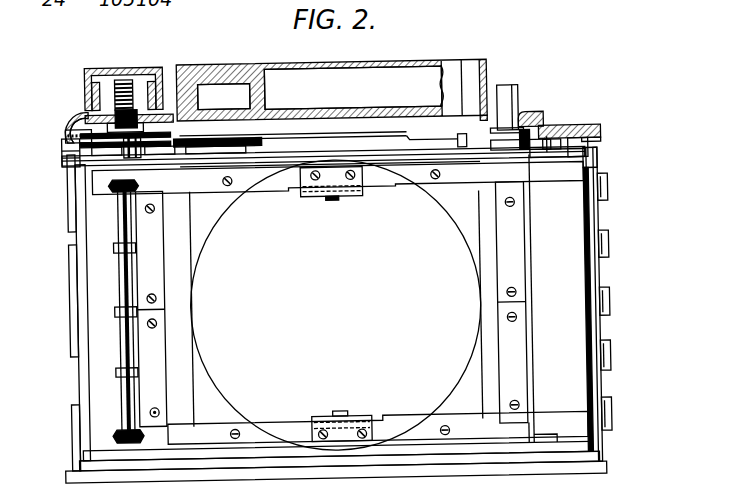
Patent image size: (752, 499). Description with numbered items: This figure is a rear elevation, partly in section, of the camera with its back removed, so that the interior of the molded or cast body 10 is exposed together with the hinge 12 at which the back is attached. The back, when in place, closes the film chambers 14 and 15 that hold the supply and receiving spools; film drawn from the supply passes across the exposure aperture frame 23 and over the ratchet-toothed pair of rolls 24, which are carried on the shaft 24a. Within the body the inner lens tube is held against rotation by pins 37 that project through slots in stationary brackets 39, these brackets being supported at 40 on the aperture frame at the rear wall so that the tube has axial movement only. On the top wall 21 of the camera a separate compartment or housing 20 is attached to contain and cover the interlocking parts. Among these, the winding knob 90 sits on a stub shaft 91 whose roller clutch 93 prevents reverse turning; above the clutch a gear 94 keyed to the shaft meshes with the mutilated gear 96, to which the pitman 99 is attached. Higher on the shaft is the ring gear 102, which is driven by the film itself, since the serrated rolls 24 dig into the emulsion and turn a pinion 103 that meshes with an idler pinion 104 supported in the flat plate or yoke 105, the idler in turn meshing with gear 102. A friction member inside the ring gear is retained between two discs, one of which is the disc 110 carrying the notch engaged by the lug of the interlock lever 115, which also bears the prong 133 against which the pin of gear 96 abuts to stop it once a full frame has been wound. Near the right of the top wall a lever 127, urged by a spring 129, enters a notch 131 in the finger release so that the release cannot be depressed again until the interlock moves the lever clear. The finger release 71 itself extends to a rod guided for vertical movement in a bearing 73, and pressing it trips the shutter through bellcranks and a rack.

The body 10 is at (600, 158).
The hinge 12 is at (609, 247).
The film chamber 14 is at (572, 333).
The film chamber 15 is at (91, 362).
The compartment or housing 20 is at (485, 62).
The top wall 21 is at (575, 150).
The exposure aperture frame 23 is at (478, 349).
The ratchet-toothed rolls 24 is at (117, 186).
The shaft 24a is at (112, 252).
The pins 37 is at (338, 200).
The stationary brackets 39 is at (364, 196).
The support 40 is at (366, 187).
The finger release 71 is at (510, 88).
The bearing 73 is at (524, 130).
The winding knob 90 is at (92, 64).
The stub shaft 91 is at (121, 74).
The roller clutch 93 is at (78, 154).
The gear 94 is at (66, 133).
The gear 96 is at (230, 141).
The pitman 99 is at (332, 131).
The ring gear 102 is at (70, 122).
The pinion 103 is at (66, 152).
The idler pinion 104 is at (142, 156).
The flat plate or yoke 105 is at (98, 110).
The disc 110 is at (72, 112).
The interlock lever 115 is at (298, 162).
The lever 127 is at (535, 161).
The spring 129 is at (538, 118).
The notch 131 is at (498, 165).
The prong 133 is at (271, 161).